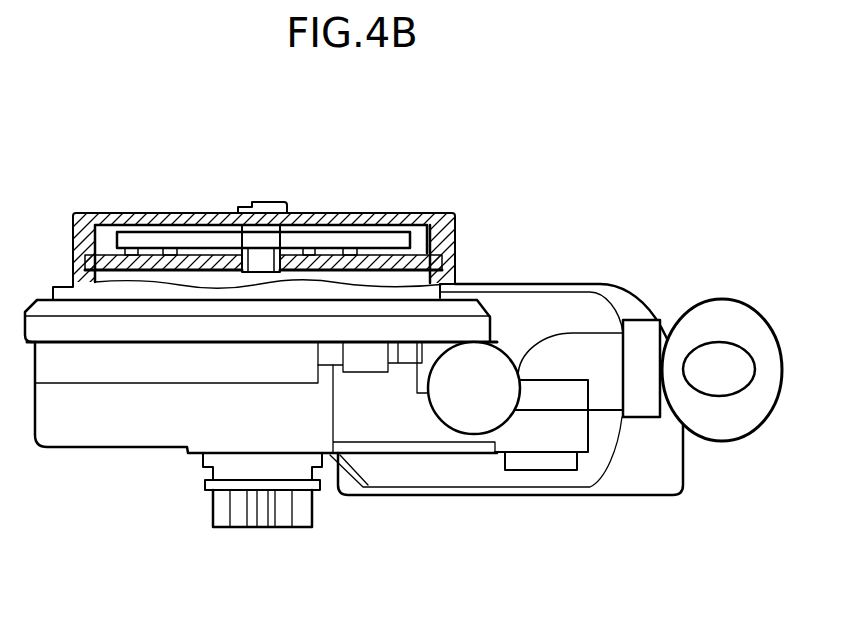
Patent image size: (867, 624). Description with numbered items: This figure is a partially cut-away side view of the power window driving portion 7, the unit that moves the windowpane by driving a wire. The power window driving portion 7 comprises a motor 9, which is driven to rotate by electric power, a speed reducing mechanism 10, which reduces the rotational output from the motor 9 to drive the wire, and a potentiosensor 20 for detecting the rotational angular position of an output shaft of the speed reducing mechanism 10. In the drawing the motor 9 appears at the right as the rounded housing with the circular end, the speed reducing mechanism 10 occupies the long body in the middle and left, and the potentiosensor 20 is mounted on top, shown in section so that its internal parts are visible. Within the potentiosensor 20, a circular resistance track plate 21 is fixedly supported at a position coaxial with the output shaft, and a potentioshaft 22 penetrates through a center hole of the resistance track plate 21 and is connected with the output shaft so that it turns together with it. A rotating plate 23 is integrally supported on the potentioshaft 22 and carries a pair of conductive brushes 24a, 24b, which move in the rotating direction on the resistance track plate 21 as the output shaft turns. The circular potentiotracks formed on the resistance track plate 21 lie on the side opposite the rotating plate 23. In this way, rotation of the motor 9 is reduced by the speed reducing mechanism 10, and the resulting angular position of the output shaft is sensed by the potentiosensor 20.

The power window driving portion 7 is at (556, 357).
The motor 9 is at (440, 478).
The speed reducing mechanism 10 is at (115, 432).
The potentiosensor 20 is at (270, 184).
The resistance track plate 21 is at (450, 262).
The potentioshaft 22 is at (259, 262).
The rotating plate 23 is at (123, 232).
The conductive brush 24a is at (364, 249).
The conductive brush 24b is at (186, 252).